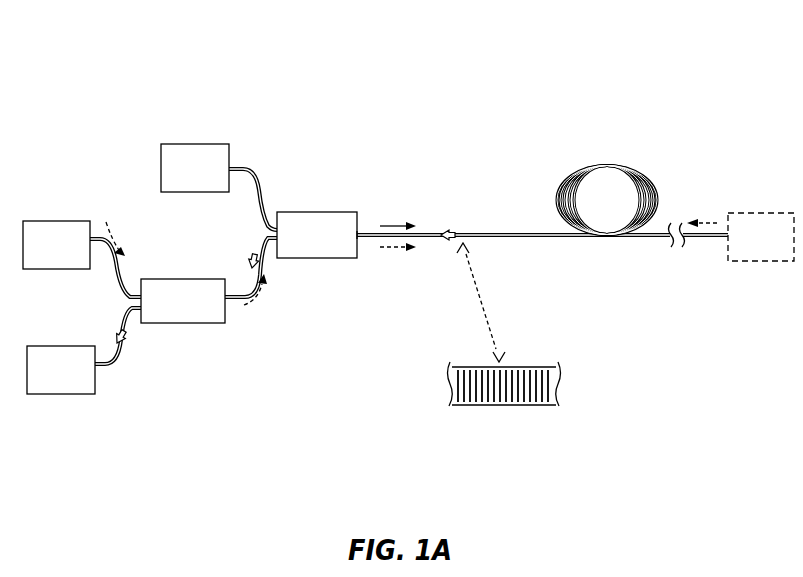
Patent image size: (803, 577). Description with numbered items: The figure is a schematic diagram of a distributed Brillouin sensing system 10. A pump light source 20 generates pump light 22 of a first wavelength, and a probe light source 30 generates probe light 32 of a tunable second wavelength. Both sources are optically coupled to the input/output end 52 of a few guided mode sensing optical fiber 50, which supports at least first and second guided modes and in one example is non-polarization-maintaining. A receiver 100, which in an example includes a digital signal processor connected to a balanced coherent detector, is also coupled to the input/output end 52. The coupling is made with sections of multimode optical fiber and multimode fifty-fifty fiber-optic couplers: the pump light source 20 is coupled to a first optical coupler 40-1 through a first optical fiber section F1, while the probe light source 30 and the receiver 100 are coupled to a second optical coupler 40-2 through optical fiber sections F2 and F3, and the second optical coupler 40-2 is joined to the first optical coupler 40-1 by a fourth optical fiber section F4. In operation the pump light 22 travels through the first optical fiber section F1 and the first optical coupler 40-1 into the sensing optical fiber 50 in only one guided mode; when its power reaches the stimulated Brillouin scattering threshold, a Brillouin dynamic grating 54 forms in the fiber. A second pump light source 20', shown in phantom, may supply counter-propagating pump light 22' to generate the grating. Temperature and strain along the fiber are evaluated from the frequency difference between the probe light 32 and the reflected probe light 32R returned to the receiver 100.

The distributed Brillouin sensing system 10 is at (122, 84).
The pump light source 20 is at (195, 168).
The second pump light source 20' is at (761, 237).
The pump light 22 is at (344, 184).
The pump light from second pump light source 22' is at (717, 189).
The probe light source 30 is at (70, 261).
The probe light 32 is at (104, 215).
The reflected probe light 32R is at (446, 231).
The first optical coupler 40-1 is at (342, 253).
The second optical coupler 40-2 is at (206, 315).
The sensing optical fiber 50 is at (548, 237).
The input/output end 52 is at (360, 232).
The Brillouin dynamic grating 54 is at (456, 410).
The receiver 100 is at (82, 388).
The first optical fiber section F1 is at (238, 164).
The second optical fiber section F2 is at (113, 268).
The third optical fiber section F3 is at (115, 364).
The fourth optical fiber section F4 is at (263, 242).